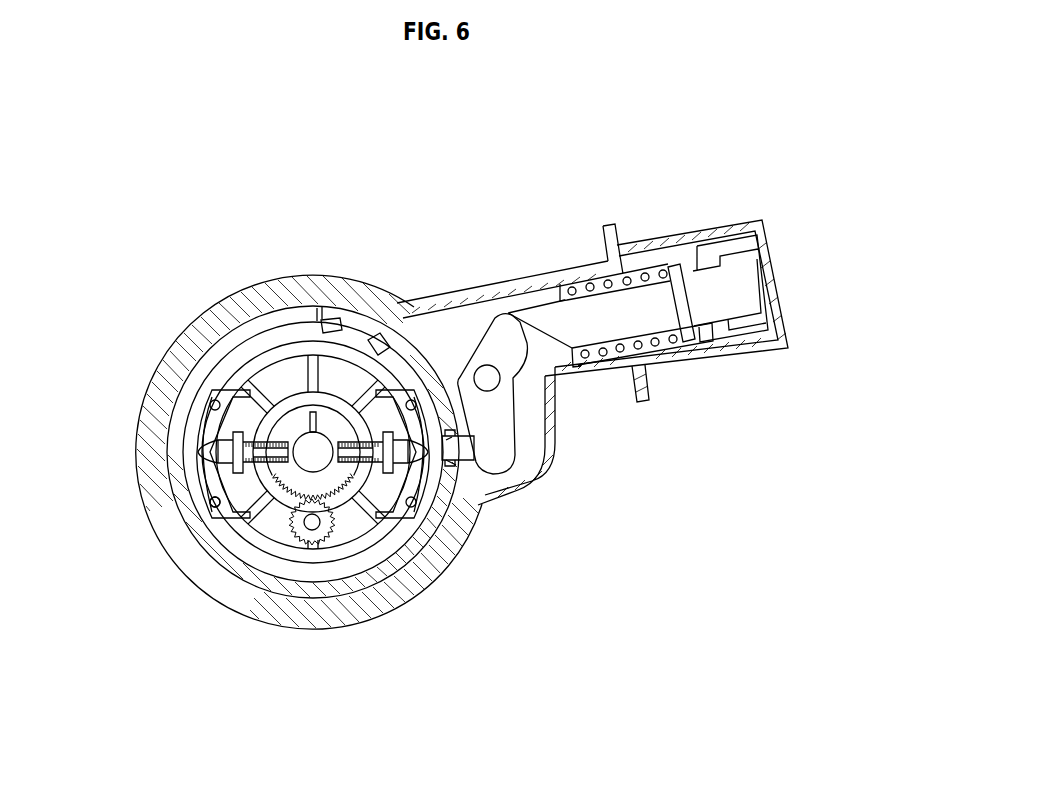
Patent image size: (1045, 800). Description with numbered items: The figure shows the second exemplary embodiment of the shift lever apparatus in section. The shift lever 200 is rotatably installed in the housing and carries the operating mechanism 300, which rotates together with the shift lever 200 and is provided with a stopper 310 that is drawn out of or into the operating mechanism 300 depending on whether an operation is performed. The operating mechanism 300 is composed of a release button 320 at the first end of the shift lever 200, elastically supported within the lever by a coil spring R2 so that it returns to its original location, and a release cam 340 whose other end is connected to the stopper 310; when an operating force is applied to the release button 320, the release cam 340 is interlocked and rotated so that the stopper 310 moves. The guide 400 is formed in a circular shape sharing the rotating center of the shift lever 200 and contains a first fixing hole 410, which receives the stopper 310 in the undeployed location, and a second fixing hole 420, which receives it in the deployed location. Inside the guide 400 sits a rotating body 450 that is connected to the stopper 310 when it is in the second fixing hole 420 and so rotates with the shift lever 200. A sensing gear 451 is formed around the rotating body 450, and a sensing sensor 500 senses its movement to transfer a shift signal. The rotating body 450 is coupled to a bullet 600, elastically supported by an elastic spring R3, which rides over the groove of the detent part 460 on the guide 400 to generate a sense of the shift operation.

The shift lever 200 is at (546, 264).
The operating mechanism 300 is at (613, 355).
The stopper 310 is at (480, 502).
The release button 320 is at (713, 288).
The release cam 340 is at (507, 433).
The guide 400 is at (193, 585).
The first fixing hole 410 is at (462, 452).
The second fixing hole 420 is at (347, 318).
The rotating body 450 is at (293, 403).
The sensing gear 451 is at (332, 503).
The detent part 460 is at (207, 413).
The sensing sensor 500 is at (293, 545).
The bullet 600 is at (448, 467).
The coil spring R2 is at (643, 272).
The elastic spring R3 is at (218, 505).